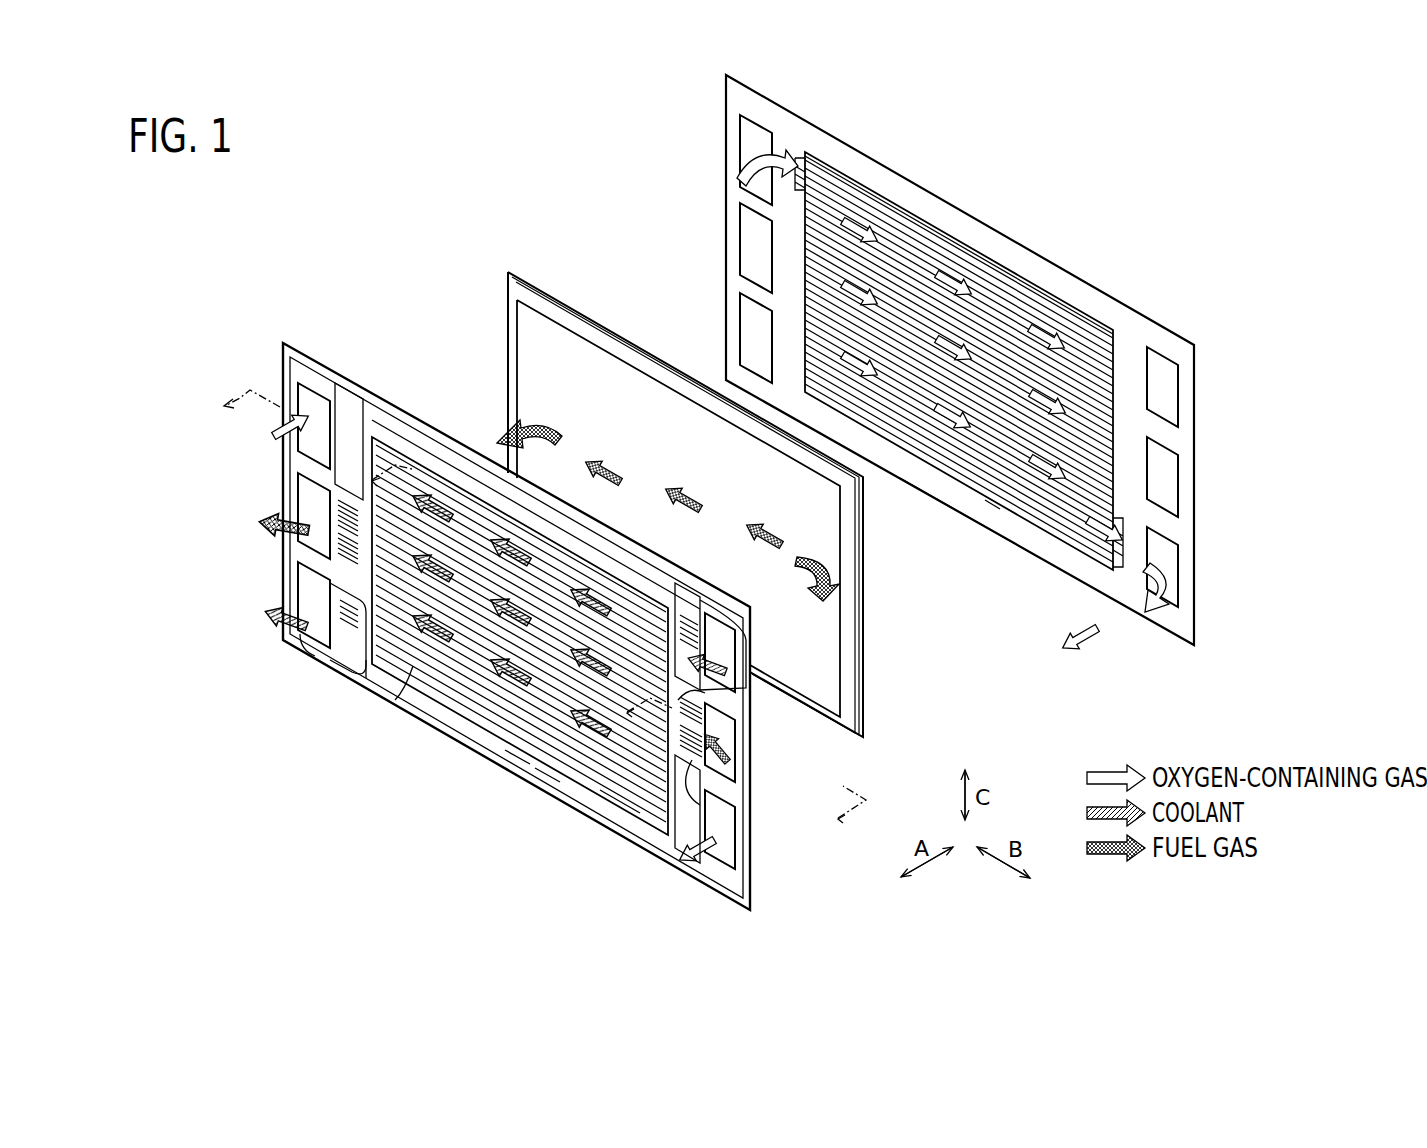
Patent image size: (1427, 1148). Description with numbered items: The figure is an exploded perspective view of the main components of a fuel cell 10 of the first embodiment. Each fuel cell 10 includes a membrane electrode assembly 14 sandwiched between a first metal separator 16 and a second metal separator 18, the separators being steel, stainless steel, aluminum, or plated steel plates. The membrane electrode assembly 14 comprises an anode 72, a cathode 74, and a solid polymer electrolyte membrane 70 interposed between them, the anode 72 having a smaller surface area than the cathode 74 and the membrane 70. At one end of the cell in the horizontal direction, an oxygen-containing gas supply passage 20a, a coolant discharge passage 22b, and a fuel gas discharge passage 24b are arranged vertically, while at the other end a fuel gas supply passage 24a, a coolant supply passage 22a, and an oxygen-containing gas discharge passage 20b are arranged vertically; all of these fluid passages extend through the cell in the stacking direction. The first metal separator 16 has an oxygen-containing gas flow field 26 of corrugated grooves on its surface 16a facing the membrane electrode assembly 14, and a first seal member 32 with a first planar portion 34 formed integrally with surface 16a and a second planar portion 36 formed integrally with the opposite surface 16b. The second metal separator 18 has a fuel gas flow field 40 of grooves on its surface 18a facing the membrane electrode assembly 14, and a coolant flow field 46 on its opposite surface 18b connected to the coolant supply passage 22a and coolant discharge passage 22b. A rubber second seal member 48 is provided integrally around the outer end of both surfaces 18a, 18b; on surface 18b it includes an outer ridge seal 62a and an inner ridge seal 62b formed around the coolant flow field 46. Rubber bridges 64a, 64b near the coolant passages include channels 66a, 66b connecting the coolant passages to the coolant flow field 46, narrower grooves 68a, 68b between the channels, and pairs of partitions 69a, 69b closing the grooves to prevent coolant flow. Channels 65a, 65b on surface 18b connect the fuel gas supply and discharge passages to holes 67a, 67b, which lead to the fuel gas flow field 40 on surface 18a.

The fuel cell 10 is at (381, 196).
The membrane electrode assembly 14 is at (681, 488).
The first metal separator 16 is at (960, 365).
The surface of first metal separator 16a is at (953, 490).
The surface of first metal separator 16b is at (984, 500).
The second metal separator 18 is at (543, 610).
The surface of second metal separator 18a is at (540, 772).
The surface of second metal separator 18b is at (514, 756).
The oxygen-containing gas supply passage 20a is at (320, 392).
The oxygen-containing gas discharge passage 20b is at (720, 845).
The coolant supply passage 22a is at (722, 718).
The coolant discharge passage 22b is at (306, 503).
The fuel gas supply passage 24a is at (720, 636).
The fuel gas discharge passage 24b is at (306, 593).
The oxygen-containing gas flow field 26 is at (959, 356).
The first seal member 32 is at (972, 238).
The first planar portion 34 is at (922, 203).
The second planar portion 36 is at (1035, 308).
The fuel gas flow field 40 is at (457, 692).
The coolant flow field 46 is at (417, 670).
The second seal member 48 is at (612, 803).
The outer ridge seal 62a is at (437, 440).
The inner ridge seal 62b is at (458, 470).
The rubber bridge 64a is at (738, 757).
The rubber bridge 64b is at (300, 522).
The channels 65a is at (741, 603).
The channels 65b is at (298, 653).
The channels 66a is at (690, 762).
The channels 66b is at (340, 574).
The holes 67a is at (712, 602).
The holes 67b is at (334, 666).
The grooves 68a is at (730, 742).
The grooves 68b is at (336, 470).
The partitions 69a is at (715, 689).
The partitions 69b is at (338, 492).
The solid polymer electrolyte membrane 70 is at (860, 679).
The anode 72 is at (864, 648).
The cathode 74 is at (856, 709).